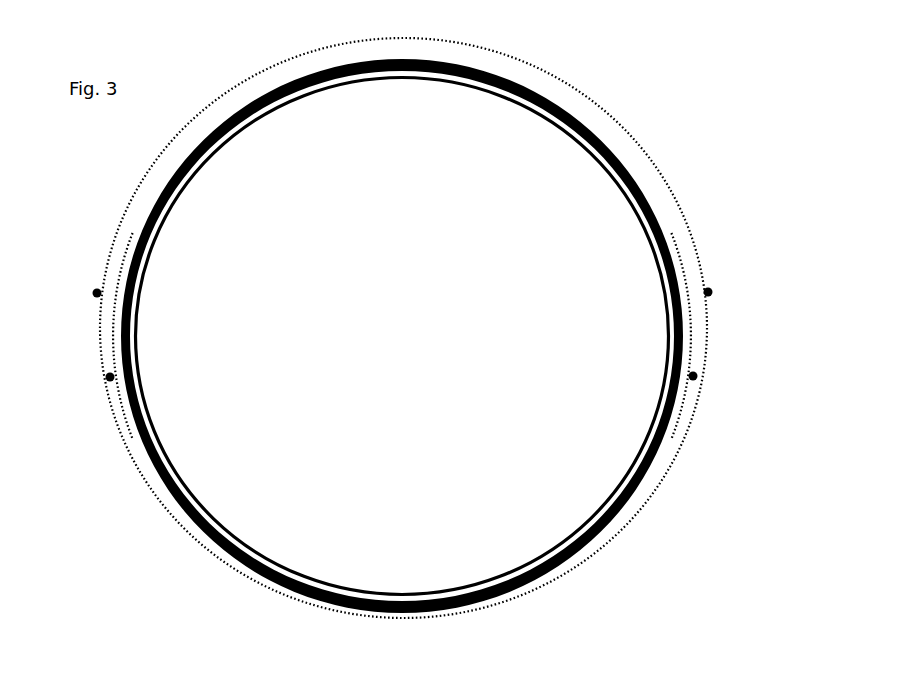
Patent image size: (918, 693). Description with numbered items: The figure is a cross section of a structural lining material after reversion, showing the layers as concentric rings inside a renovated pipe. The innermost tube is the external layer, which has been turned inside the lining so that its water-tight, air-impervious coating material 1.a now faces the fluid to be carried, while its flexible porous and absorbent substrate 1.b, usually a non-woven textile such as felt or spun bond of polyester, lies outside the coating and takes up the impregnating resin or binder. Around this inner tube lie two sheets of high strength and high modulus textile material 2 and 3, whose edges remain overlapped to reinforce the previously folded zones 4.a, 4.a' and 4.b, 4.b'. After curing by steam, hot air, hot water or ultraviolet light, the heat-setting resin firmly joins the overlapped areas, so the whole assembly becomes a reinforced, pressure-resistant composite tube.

The air-impervious coating material 1.a is at (138, 334).
The flexible porous and absorbent substrate 1.b is at (672, 333).
The sheet of high strength and high modulus textile material 2 is at (168, 507).
The sheet of high strength and high modulus textile material 3 is at (620, 120).
The folded zone 4.a is at (61, 294).
The folded zone 4.a' is at (74, 336).
The folded zone 4.b is at (730, 336).
The folded zone 4.b' is at (749, 294).